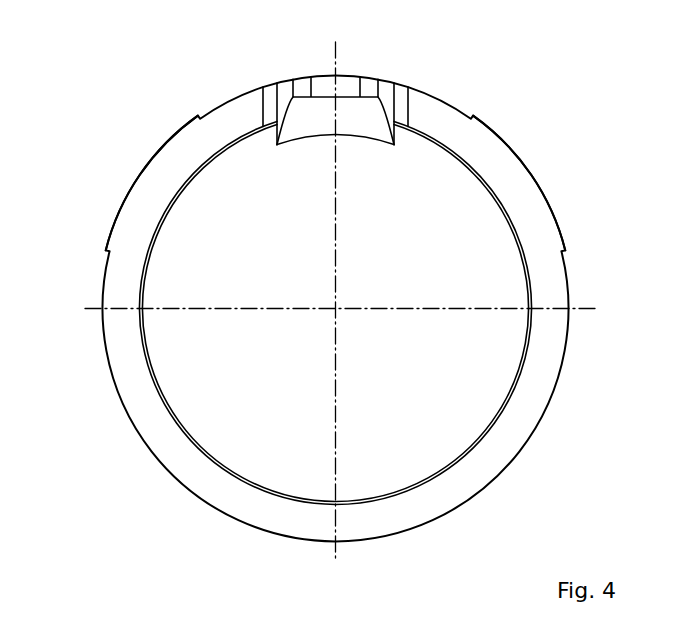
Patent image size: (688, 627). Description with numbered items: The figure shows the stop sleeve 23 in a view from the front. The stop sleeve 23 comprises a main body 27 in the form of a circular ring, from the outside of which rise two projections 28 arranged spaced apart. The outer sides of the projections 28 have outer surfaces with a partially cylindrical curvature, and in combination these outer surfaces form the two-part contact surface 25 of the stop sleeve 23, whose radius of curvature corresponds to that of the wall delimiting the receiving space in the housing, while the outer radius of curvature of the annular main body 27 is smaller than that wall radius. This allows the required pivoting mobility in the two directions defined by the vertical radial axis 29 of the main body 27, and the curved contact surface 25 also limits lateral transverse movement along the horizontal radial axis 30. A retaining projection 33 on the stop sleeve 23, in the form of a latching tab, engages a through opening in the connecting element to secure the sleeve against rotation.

The stop sleeve 23 is at (540, 367).
The contact surface 25 is at (150, 132).
The main body 27 is at (522, 417).
The projections 28 is at (524, 134).
The vertical radial axis 29 is at (352, 48).
The horizontal radial axis 30 is at (596, 296).
The retaining projection 33 is at (358, 152).